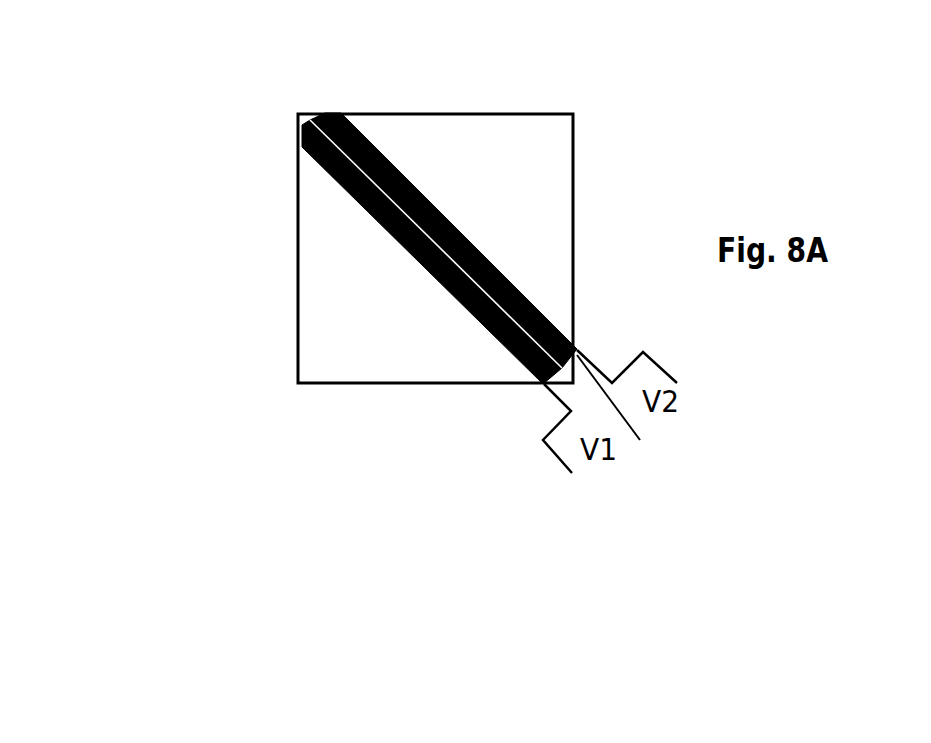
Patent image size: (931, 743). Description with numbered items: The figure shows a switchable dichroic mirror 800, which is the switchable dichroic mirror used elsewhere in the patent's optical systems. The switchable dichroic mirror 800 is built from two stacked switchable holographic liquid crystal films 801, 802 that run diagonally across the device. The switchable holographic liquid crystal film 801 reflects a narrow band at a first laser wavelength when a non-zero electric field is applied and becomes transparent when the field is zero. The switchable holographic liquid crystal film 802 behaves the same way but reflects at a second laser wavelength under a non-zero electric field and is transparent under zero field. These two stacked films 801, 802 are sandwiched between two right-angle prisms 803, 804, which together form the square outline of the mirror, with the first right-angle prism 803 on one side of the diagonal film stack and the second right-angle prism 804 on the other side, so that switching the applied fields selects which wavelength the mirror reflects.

The switchable dichroic mirror 800 is at (307, 196).
The switchable holographic liquid crystal film 801 is at (308, 156).
The switchable holographic liquid crystal film 802 is at (325, 113).
The right-angle prism 803 is at (345, 291).
The right-angle prism 804 is at (472, 171).